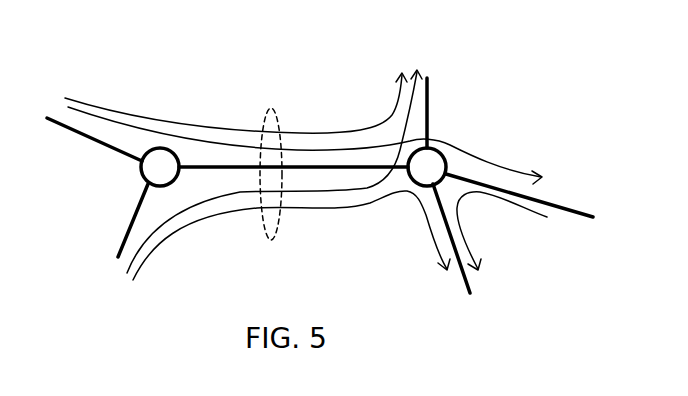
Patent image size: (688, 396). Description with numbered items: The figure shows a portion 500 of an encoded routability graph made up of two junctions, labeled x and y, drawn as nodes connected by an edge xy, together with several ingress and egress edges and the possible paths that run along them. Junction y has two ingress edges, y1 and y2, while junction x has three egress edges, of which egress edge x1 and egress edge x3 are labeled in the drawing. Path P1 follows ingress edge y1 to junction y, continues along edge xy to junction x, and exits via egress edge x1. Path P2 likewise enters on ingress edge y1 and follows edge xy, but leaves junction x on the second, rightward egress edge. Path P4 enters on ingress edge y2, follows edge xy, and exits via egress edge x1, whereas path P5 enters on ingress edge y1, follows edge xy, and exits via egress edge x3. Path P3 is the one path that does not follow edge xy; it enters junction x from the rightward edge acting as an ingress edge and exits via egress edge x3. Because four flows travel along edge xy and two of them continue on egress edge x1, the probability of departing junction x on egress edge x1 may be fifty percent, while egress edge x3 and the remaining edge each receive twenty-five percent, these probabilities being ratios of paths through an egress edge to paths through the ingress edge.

The portion of an encoded routability graph 500 is at (107, 27).
The ingress edge y1 is at (86, 139).
The ingress edge y2 is at (122, 220).
The egress edge x1 is at (444, 113).
The egress edge x3 is at (466, 244).
The path P1 is at (98, 107).
The path P2 is at (470, 152).
The path P3 is at (502, 207).
The path P4 is at (161, 222).
The path P5 is at (344, 211).
The edge xy is at (274, 188).